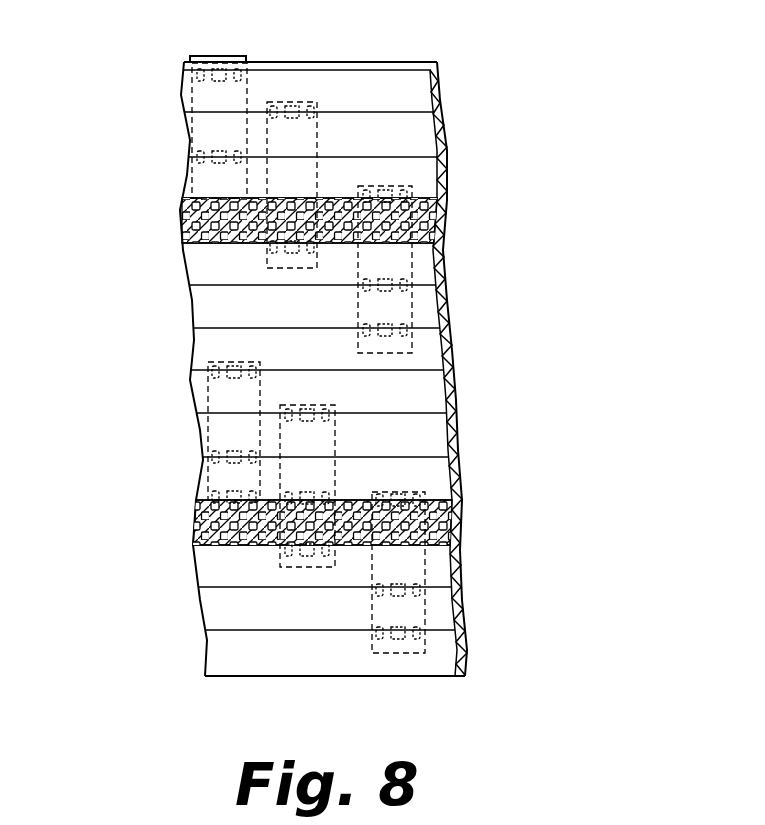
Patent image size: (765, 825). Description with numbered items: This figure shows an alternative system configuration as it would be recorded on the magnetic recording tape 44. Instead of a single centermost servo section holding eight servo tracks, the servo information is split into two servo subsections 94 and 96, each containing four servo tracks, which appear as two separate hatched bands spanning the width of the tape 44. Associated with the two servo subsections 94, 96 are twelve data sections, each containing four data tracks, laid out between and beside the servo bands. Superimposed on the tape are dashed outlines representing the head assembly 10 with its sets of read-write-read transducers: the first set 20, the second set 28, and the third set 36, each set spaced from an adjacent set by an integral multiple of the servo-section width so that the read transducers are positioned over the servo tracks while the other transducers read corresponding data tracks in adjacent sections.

The electronic circuit module 10 is at (240, 330).
The first set of read-write-read transducers 20 is at (257, 266).
The second set of read/write transducers 28 is at (187, 178).
The third set of read/write transducers 36 is at (316, 131).
The magnetic recording tape 44 is at (386, 62).
The servo subsection 94 is at (440, 203).
The servo subsection 96 is at (455, 508).